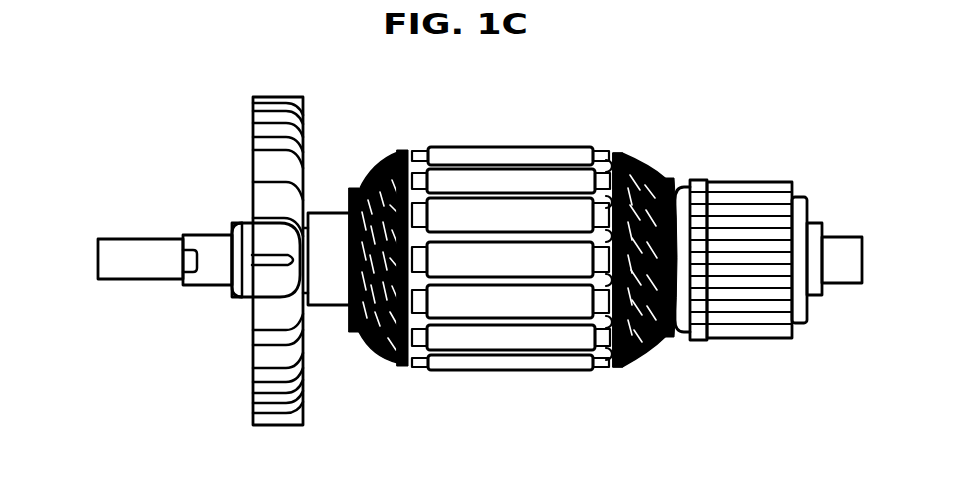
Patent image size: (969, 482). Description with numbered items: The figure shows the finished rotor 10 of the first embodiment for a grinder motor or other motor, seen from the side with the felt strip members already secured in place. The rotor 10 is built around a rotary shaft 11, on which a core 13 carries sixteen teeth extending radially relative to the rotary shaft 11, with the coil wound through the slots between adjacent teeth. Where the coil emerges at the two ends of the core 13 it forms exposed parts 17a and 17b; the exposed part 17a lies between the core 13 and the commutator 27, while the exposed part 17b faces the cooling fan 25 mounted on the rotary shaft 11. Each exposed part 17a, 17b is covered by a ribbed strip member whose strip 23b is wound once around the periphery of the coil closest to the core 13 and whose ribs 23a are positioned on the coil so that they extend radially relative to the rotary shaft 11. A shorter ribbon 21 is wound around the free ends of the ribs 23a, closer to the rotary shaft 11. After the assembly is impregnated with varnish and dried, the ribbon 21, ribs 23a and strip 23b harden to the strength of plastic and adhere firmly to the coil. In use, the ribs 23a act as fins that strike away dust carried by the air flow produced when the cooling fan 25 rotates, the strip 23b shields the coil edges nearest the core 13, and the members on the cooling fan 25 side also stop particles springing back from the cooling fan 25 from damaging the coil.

The rotor 10 is at (722, 78).
The rotary shaft 11 is at (150, 263).
The core 13 is at (500, 157).
The exposed part of coil 17a is at (692, 128).
The exposed part of coil 17b is at (427, 128).
The ribbon 21 is at (355, 337).
The ribs 23a is at (372, 345).
The strip 23b is at (398, 363).
The cooling fan 25 is at (263, 163).
The commutator 27 is at (752, 198).